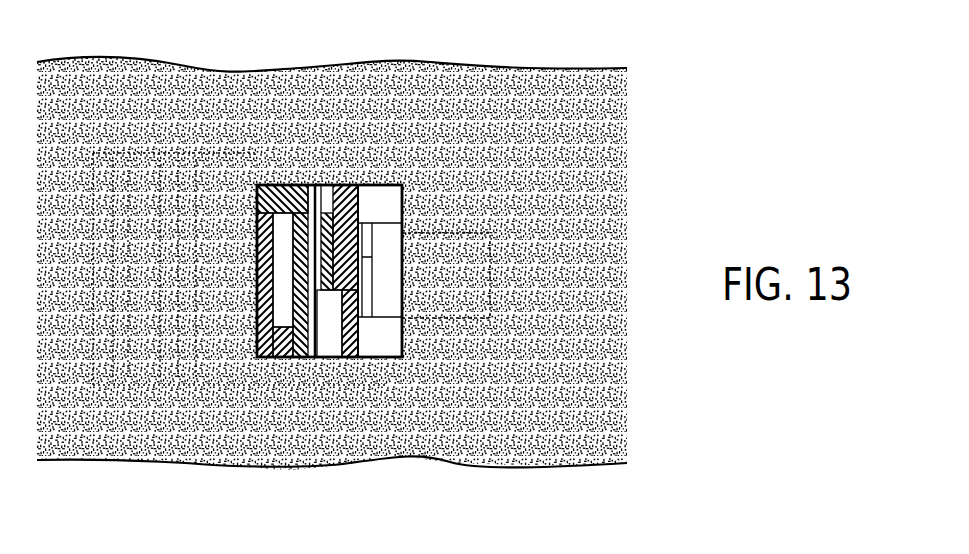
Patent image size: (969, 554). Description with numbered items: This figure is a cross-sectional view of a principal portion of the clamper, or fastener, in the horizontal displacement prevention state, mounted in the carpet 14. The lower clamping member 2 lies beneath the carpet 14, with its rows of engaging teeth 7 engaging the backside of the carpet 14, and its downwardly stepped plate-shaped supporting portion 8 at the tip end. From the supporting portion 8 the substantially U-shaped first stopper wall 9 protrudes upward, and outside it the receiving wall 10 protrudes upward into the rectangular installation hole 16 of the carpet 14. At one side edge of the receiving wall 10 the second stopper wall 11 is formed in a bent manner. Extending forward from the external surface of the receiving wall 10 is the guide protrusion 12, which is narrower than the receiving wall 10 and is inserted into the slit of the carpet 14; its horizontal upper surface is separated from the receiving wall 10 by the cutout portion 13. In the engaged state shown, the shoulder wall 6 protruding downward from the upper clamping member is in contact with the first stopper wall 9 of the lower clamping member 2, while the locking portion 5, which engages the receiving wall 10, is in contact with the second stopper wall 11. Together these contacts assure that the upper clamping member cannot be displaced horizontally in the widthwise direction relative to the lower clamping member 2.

The lower clamping member 2 is at (212, 385).
The locking portion 5 is at (321, 200).
The shoulder wall 6 is at (278, 183).
The engaging teeth 7 is at (146, 385).
The supporting portion 8 is at (309, 385).
The first stopper wall 9 is at (288, 340).
The receiving wall 10 is at (352, 325).
The second stopper wall 11 is at (337, 185).
The guide protrusion 12 is at (490, 272).
The cutout portion 13 is at (368, 283).
The carpet 14 is at (587, 127).
The installation hole 16 is at (398, 211).